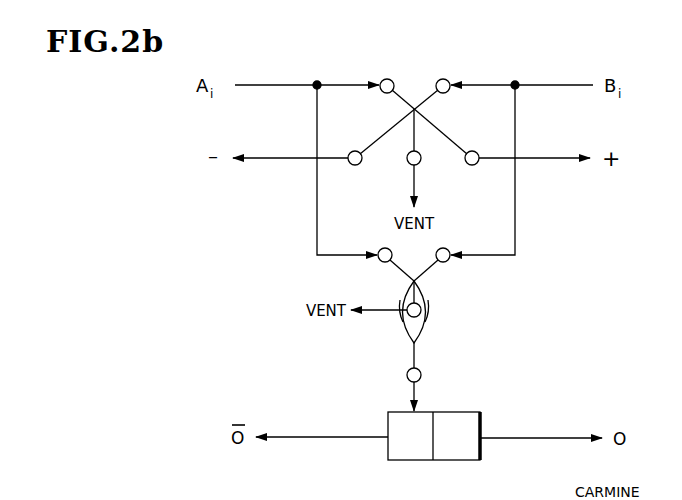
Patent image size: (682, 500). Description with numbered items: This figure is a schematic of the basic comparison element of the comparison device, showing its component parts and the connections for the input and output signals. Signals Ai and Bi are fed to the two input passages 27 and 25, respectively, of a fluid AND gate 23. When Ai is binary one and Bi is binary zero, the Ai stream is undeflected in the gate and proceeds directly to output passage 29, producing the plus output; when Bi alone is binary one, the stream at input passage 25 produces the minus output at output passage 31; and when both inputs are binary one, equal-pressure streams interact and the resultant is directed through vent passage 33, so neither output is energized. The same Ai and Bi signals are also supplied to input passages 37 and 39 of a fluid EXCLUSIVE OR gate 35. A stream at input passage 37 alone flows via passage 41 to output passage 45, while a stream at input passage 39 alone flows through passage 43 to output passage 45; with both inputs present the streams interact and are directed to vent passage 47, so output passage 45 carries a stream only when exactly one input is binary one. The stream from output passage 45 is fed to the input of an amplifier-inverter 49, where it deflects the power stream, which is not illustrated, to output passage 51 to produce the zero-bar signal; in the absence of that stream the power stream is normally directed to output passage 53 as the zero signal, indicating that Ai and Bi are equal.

The fluid AND gate 23 is at (418, 96).
The input passage 25 is at (449, 81).
The input passage 27 is at (386, 78).
The output passage 29 is at (478, 152).
The output passage 31 is at (352, 151).
The vent passage 33 is at (420, 165).
The fluid EXCLUSIVE OR gate 35 is at (435, 310).
The input passage 37 is at (380, 250).
The input passage 39 is at (449, 251).
The passage 41 is at (426, 328).
The passage 43 is at (403, 326).
The output passage 45 is at (421, 376).
The vent passage 47 is at (408, 304).
The amplifier-inverter 49 is at (414, 461).
The output passage 51 is at (331, 435).
The output passage 53 is at (507, 436).